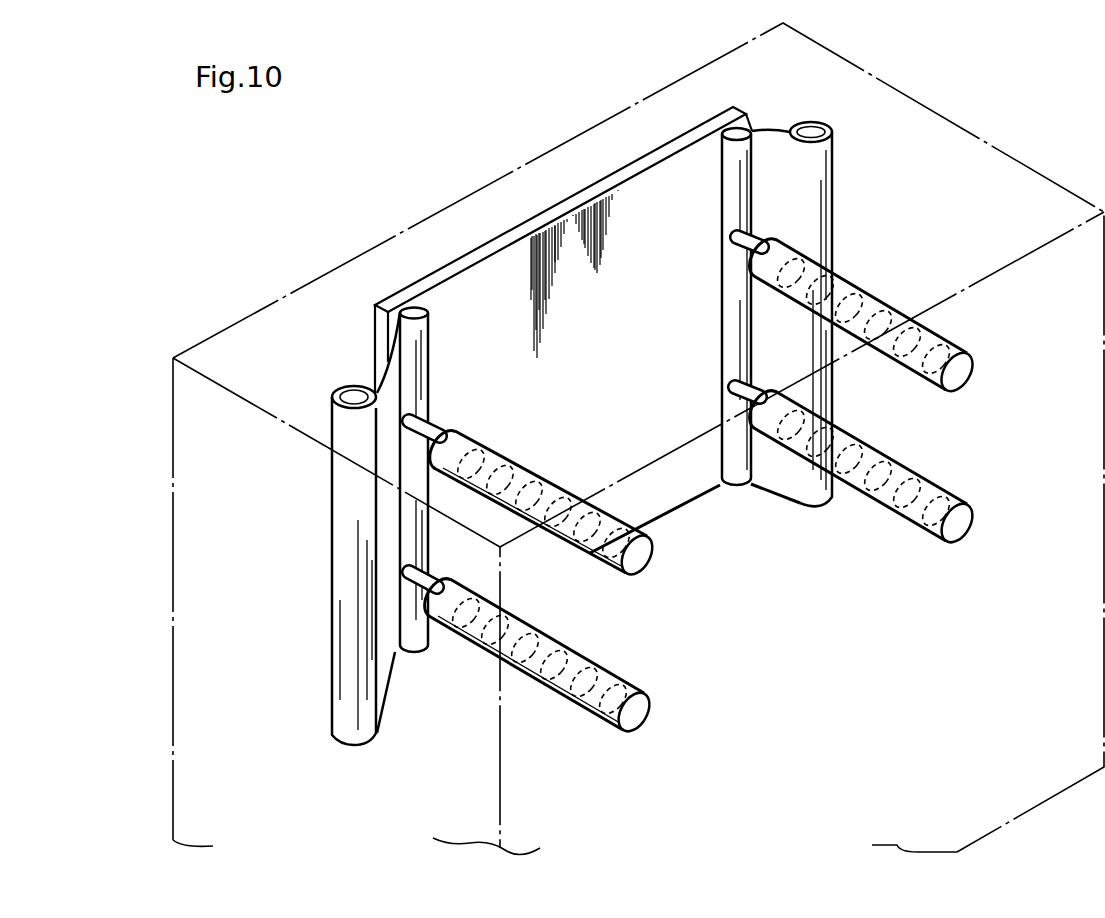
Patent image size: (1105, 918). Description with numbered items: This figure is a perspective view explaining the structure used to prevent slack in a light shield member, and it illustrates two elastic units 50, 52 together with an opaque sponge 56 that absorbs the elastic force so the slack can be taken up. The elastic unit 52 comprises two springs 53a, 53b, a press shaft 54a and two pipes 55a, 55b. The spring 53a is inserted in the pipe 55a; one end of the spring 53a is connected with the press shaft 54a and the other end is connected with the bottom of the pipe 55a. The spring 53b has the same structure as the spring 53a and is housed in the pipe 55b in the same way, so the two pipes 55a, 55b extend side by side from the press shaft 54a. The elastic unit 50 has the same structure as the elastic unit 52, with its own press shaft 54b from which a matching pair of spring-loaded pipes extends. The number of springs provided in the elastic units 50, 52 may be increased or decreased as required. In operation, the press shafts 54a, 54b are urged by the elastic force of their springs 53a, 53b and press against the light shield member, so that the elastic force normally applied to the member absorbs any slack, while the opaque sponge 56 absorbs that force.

The elastic unit 50 is at (992, 358).
The elastic unit 52 is at (568, 596).
The spring 53a is at (517, 457).
The spring 53b is at (545, 683).
The press shaft 54a is at (419, 344).
The press shaft 54b is at (733, 166).
The pipe 55a is at (552, 483).
The pipe 55b is at (607, 722).
The opaque sponge 56 is at (456, 262).